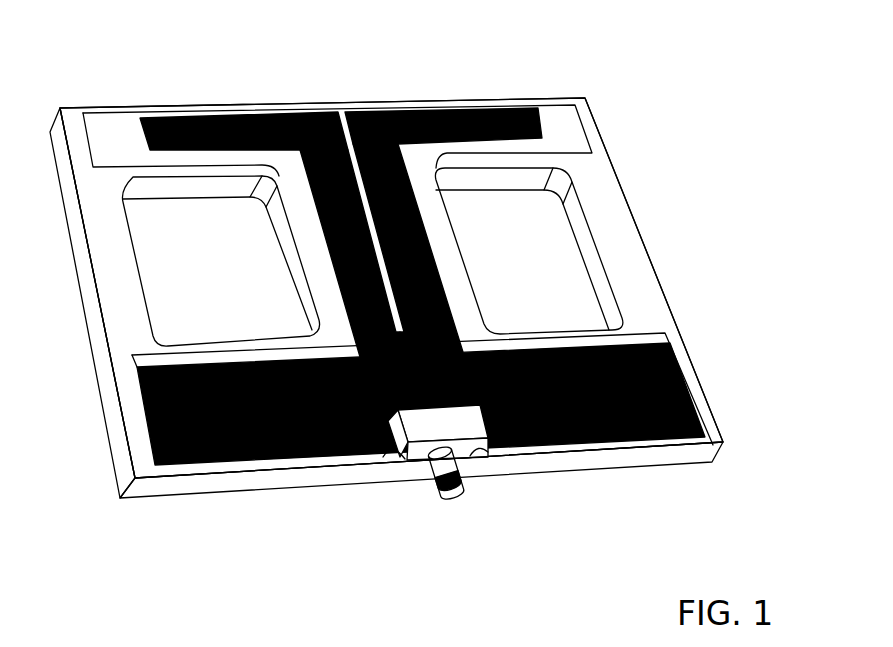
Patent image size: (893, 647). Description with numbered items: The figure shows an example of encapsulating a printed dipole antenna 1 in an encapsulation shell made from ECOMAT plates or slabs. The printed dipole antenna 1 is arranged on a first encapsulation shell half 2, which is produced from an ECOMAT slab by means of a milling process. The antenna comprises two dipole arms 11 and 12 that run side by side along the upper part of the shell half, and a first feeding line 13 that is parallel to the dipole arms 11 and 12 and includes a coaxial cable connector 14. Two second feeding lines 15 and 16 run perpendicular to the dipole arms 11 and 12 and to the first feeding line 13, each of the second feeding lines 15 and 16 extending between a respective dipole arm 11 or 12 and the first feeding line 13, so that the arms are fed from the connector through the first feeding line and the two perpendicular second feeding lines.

The printed dipole antenna 1 is at (134, 410).
The first encapsulation shell half 2 is at (635, 260).
The dipole arm 11 is at (179, 116).
The dipole arm 12 is at (442, 110).
The first feeding line 13 is at (237, 460).
The coaxial cable connector 14 is at (462, 473).
The second feeding line 15 is at (331, 253).
The second feeding line 16 is at (437, 245).